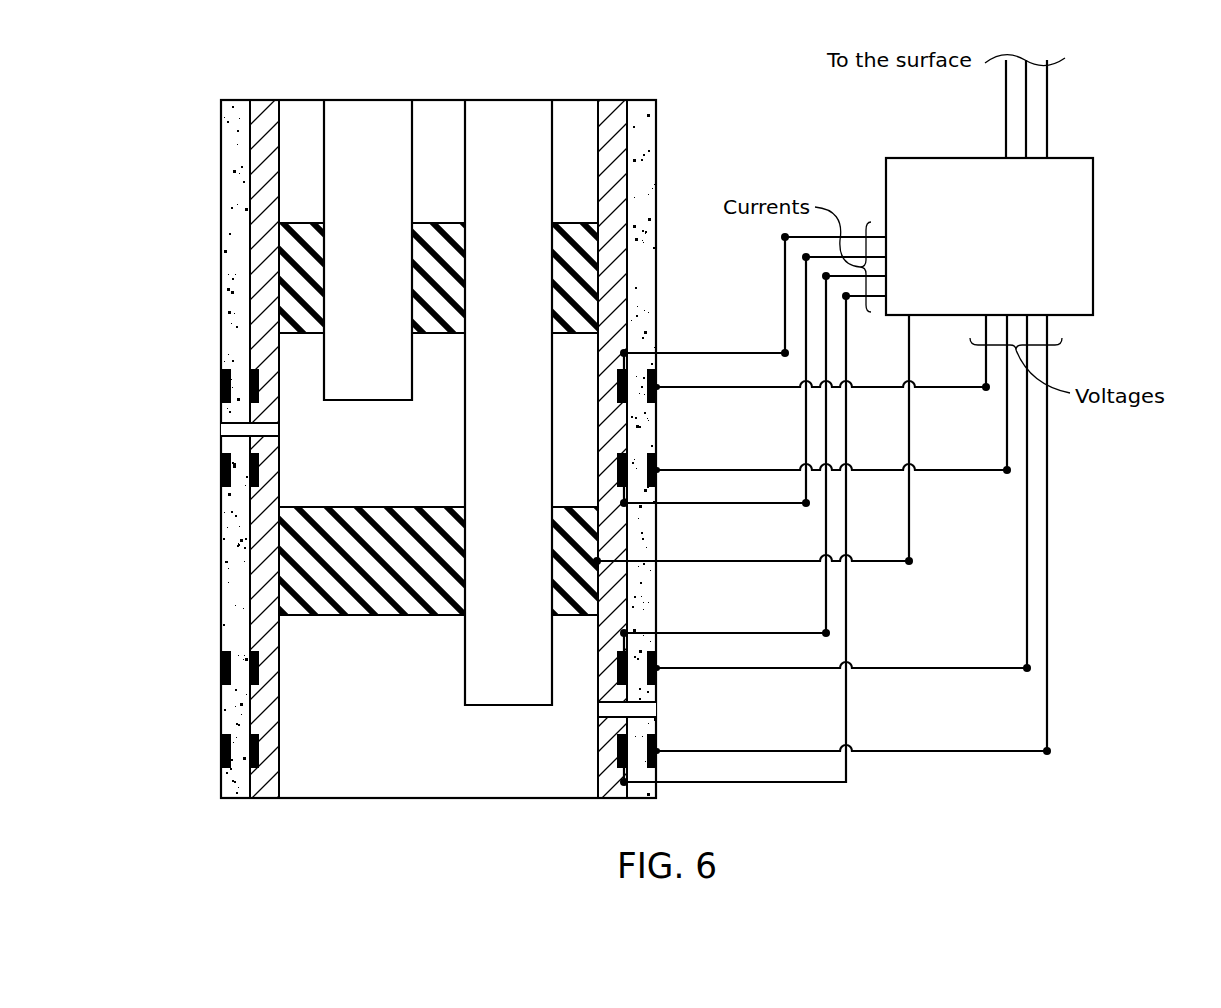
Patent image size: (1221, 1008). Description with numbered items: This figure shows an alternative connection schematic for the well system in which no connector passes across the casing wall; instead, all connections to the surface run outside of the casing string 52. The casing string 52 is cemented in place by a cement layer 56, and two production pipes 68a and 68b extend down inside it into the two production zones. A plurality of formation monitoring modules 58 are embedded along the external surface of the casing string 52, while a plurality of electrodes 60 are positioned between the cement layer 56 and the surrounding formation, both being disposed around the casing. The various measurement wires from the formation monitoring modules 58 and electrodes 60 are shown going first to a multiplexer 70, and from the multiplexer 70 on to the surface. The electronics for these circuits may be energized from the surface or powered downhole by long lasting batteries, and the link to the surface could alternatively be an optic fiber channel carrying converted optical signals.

The casing string 52 is at (258, 200).
The cement layer 56 is at (236, 165).
The formation monitoring modules 58 is at (262, 390).
The electrodes 60 is at (221, 378).
The production pipe 68a is at (323, 128).
The production pipe 68b is at (465, 125).
The multiplexer 70 is at (1095, 237).